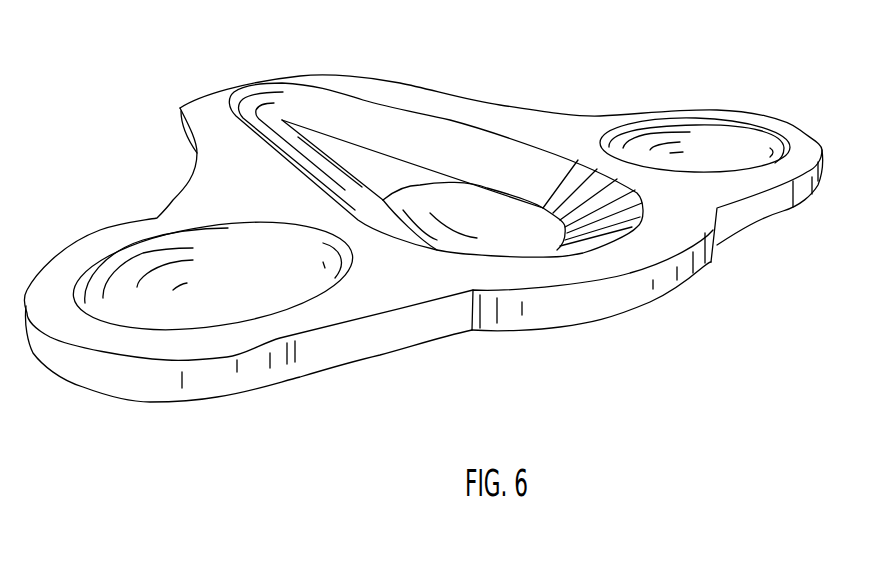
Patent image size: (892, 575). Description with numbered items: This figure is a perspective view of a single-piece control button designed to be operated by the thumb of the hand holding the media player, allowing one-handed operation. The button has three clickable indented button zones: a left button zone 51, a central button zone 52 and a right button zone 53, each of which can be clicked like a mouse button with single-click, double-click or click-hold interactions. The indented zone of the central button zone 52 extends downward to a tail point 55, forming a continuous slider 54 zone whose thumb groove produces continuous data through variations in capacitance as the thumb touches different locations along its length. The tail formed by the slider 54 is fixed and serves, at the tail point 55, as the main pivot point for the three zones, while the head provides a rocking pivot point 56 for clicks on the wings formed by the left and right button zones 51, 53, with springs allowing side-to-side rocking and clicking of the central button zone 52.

The left button zone 51 is at (707, 150).
The central button zone 52 is at (482, 217).
The right button zone 53 is at (197, 287).
The slider 54 is at (347, 150).
The tail point 55 is at (276, 114).
The rocking pivot point 56 is at (645, 308).